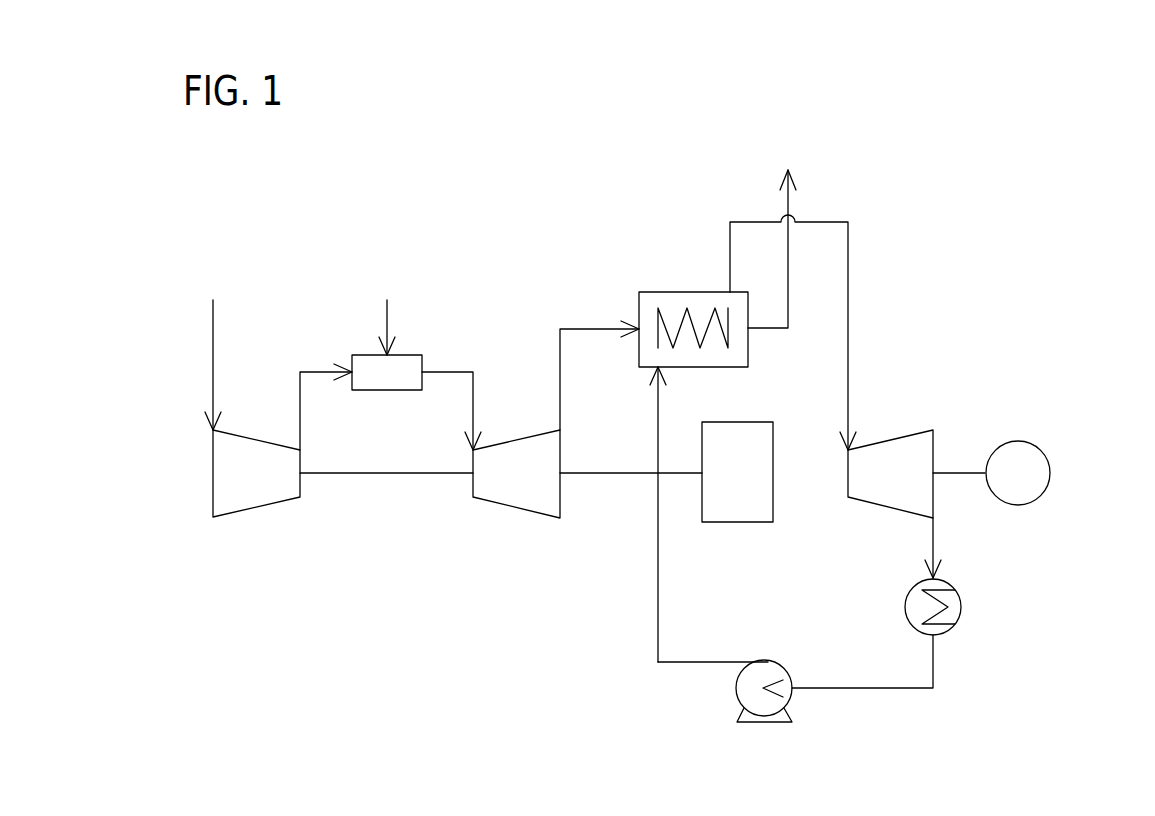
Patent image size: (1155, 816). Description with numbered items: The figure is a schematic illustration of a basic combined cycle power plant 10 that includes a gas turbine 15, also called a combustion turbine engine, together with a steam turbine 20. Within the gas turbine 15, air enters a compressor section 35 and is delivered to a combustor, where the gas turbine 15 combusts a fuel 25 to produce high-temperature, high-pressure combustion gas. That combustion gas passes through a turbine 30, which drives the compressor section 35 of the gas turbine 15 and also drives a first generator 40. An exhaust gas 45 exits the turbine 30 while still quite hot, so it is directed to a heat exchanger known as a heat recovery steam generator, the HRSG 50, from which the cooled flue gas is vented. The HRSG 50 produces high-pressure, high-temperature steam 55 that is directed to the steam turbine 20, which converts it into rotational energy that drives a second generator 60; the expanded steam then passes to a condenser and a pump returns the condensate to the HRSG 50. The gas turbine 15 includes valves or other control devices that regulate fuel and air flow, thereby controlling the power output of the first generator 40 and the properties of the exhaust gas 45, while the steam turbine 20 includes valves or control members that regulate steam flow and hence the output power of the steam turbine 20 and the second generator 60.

The combined cycle power plant 10 is at (1035, 120).
The gas turbine 15 is at (453, 250).
The steam turbine 20 is at (877, 488).
The fuel 25 is at (388, 318).
The turbine 30 is at (500, 488).
The compressor section 35 is at (240, 488).
The first generator 40 is at (722, 488).
The exhaust gas 45 is at (561, 346).
The heat recovery steam generator 50 is at (639, 300).
The steam 55 is at (848, 241).
The second generator 60 is at (1050, 469).